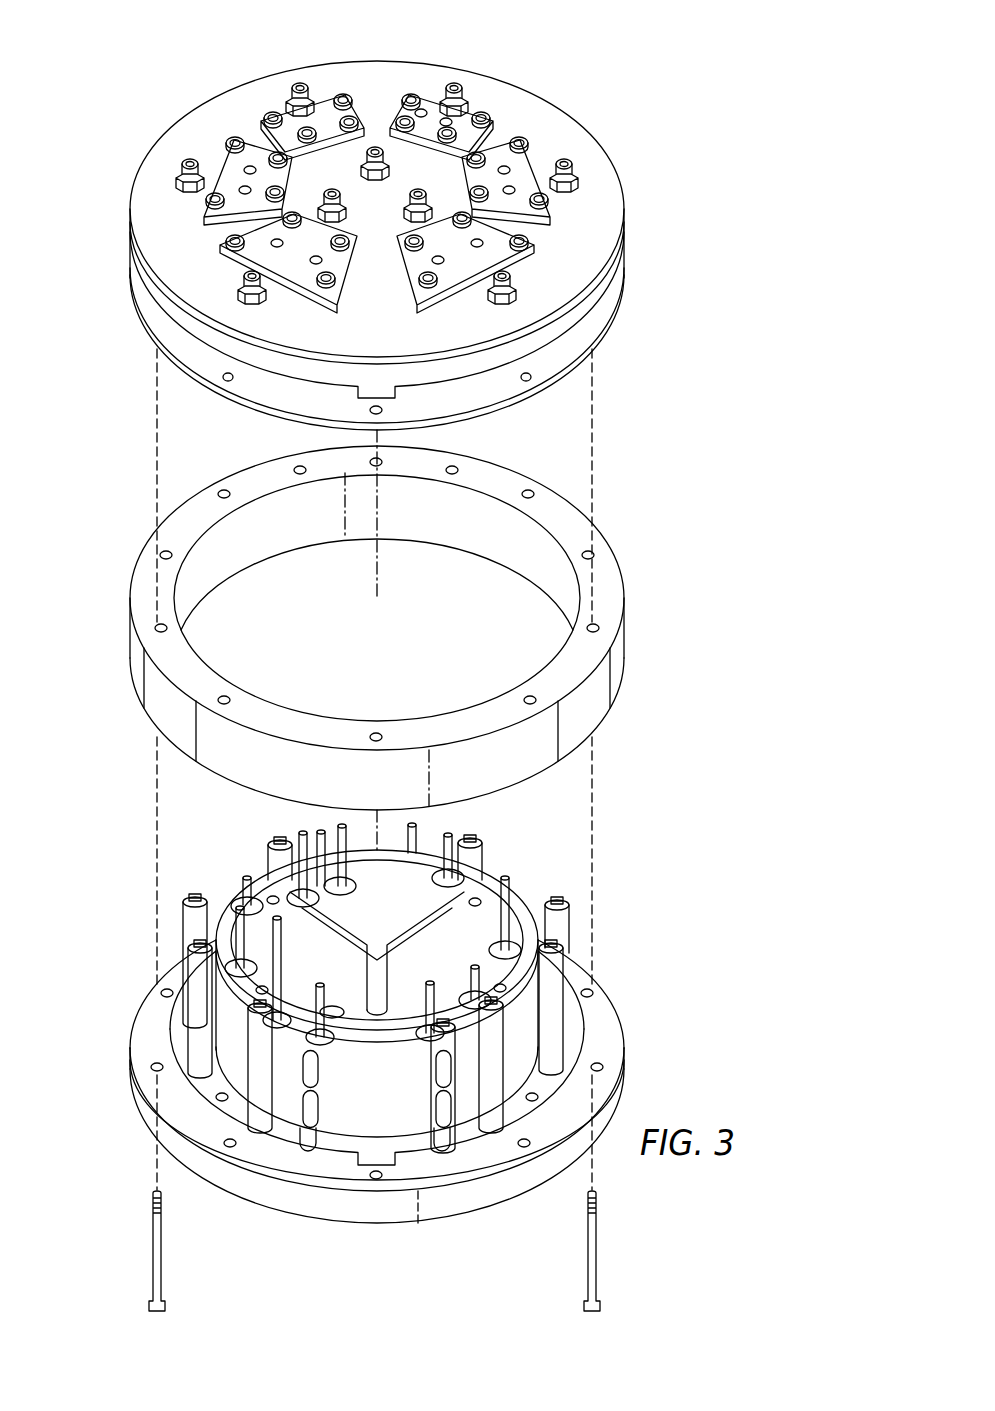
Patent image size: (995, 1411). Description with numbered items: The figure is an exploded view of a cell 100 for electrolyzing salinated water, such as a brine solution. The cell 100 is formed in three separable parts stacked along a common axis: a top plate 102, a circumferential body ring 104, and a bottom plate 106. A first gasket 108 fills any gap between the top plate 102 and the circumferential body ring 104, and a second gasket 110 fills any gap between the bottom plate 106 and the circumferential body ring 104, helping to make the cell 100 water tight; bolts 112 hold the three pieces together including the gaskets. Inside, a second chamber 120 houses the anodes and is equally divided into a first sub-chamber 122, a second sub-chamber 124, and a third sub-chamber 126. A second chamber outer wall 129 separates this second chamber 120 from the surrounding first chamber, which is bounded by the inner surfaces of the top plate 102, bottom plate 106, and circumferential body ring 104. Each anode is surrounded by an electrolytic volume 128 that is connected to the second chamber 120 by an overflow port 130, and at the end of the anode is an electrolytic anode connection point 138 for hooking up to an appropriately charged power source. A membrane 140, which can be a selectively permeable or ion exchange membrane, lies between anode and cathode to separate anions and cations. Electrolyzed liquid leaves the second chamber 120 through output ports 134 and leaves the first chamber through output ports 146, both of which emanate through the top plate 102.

The cell 100 is at (657, 157).
The top plate 102 is at (560, 117).
The circumferential body ring 104 is at (620, 650).
The bottom plate 106 is at (148, 1115).
The first gasket 108 is at (608, 330).
The second gasket 110 is at (462, 1190).
The bolts 112 is at (153, 1246).
The second chamber 120 is at (432, 902).
The first sub-chamber 122 is at (402, 902).
The second sub-chamber 124 is at (455, 950).
The third sub-chamber 126 is at (292, 936).
The electrolytic volume 128 is at (282, 1008).
The second chamber outer wall 129 is at (572, 1020).
The overflow port 130 is at (335, 1013).
The output ports 134 is at (332, 192).
The electrolytic anode connection point 138 is at (247, 892).
The membrane 140 is at (312, 1100).
The output ports 146 is at (300, 86).